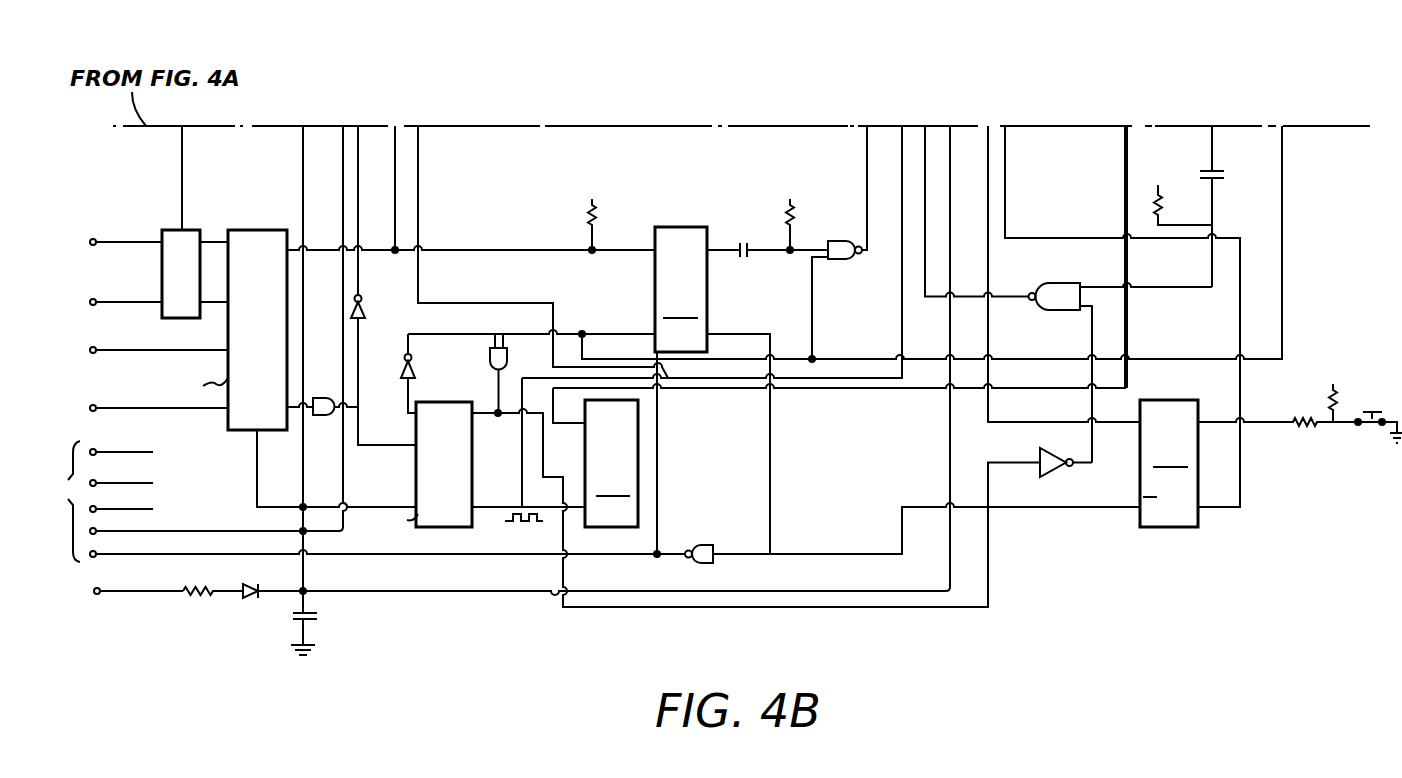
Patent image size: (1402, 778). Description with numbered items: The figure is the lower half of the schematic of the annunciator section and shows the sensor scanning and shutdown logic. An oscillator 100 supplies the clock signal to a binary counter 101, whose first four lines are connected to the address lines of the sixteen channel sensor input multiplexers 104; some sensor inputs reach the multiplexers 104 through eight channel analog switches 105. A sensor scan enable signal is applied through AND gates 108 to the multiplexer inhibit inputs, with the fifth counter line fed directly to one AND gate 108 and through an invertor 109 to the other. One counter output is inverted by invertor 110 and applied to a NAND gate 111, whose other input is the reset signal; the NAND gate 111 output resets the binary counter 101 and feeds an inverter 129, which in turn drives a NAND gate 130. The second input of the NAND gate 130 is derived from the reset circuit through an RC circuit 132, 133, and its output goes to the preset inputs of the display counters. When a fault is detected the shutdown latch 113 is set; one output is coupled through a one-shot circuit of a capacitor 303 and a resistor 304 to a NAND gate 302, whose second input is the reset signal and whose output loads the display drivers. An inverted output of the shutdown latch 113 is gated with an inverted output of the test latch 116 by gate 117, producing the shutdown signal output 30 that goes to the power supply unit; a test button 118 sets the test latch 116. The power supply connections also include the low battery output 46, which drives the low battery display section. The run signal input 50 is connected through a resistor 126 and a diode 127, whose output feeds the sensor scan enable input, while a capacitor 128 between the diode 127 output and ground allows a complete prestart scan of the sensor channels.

The analog switches 105 is at (168, 230).
The sensor input multiplexers 104 is at (262, 230).
The invertor 109 is at (363, 303).
The AND gates 108 is at (323, 398).
The invertor 110 is at (411, 360).
The NAND gate 111 is at (507, 355).
The binary counter 101 is at (462, 402).
The oscillator 100 is at (611, 463).
The shutdown latch 113 is at (639, 264).
The capacitor 303 is at (707, 270).
The resistor 304 is at (761, 230).
The NAND gate 302 is at (820, 244).
The NAND gate 130 is at (1052, 310).
The RC circuit 132 is at (1176, 193).
The RC circuit 133 is at (1234, 206).
The inverter 129 is at (1057, 465).
The test latch 116 is at (1163, 489).
The test button 118 is at (1366, 407).
The gate 117 is at (701, 545).
The low battery output 46 is at (94, 491).
The shutdown signal output 30 is at (390, 558).
The run signal input 50 is at (120, 605).
The resistor 126 is at (210, 606).
The diode 127 is at (271, 605).
The capacitor 128 is at (326, 629).